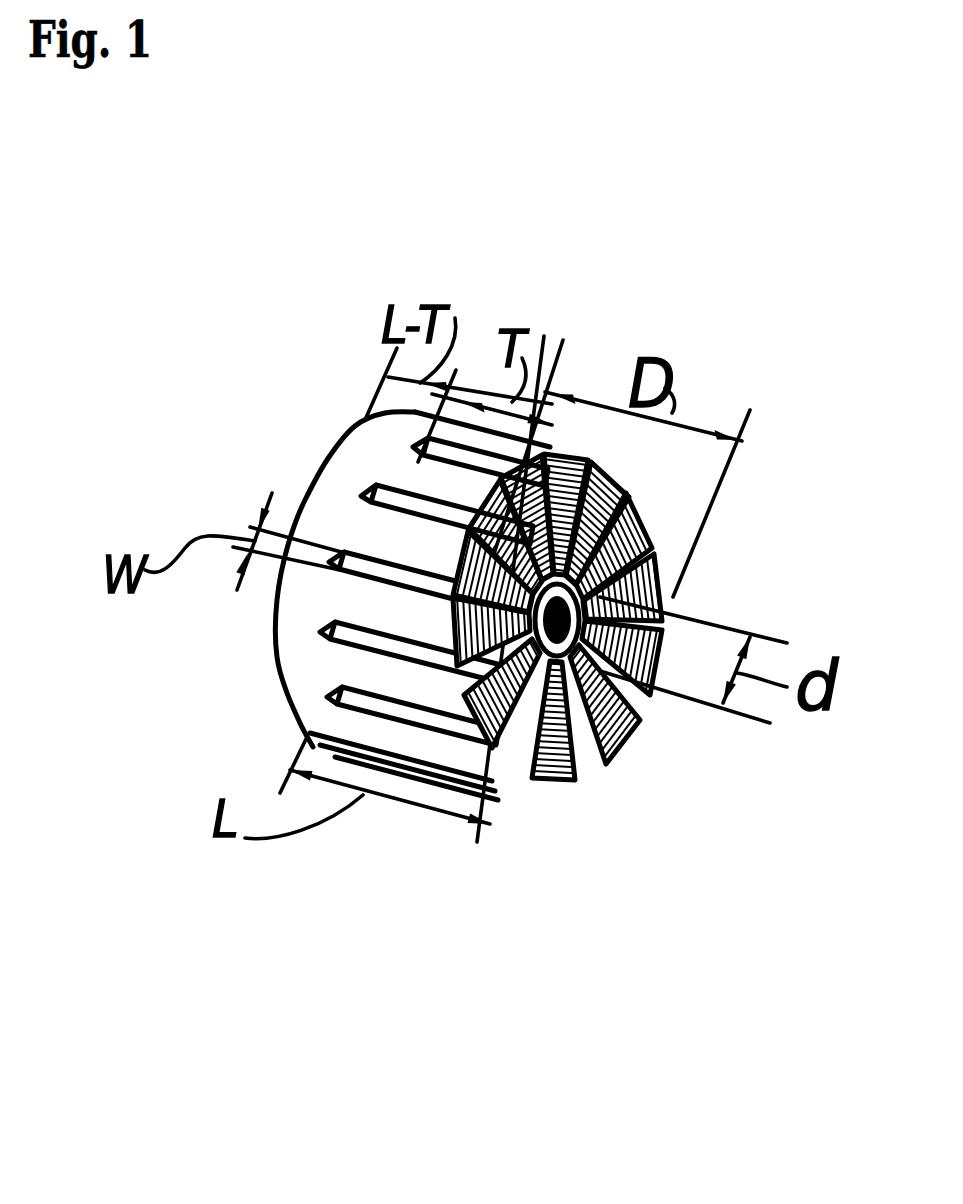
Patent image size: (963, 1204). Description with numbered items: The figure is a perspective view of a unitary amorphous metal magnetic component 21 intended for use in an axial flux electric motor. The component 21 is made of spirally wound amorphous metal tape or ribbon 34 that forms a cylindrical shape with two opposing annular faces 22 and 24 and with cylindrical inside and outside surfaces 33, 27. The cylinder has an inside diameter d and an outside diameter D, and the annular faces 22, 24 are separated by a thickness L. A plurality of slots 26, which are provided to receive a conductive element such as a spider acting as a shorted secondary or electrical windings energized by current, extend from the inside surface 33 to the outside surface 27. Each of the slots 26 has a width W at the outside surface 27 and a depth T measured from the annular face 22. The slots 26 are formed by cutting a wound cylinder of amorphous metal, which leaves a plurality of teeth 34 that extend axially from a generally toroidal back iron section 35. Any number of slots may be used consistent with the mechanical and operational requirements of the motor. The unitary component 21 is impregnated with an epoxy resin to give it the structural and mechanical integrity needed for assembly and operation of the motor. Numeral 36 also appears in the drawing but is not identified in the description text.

The unitary amorphous metal magnetic component 21 is at (197, 635).
The annular face 22 is at (537, 773).
The annular face 24 is at (312, 474).
The slots 26 is at (407, 714).
The outside surface 27 is at (385, 665).
The inside surface 33 is at (520, 775).
The teeth 34 is at (583, 772).
The back iron section 35 is at (343, 480).
The lower right rib 36 is at (630, 693).